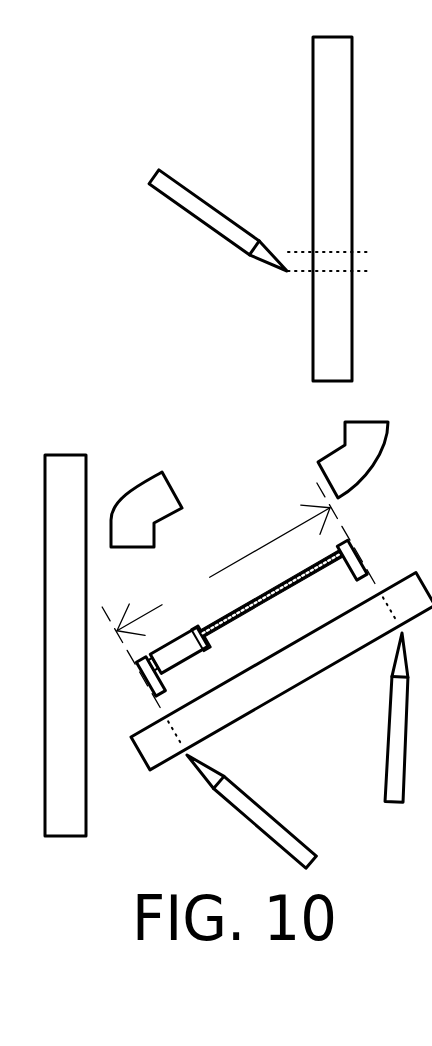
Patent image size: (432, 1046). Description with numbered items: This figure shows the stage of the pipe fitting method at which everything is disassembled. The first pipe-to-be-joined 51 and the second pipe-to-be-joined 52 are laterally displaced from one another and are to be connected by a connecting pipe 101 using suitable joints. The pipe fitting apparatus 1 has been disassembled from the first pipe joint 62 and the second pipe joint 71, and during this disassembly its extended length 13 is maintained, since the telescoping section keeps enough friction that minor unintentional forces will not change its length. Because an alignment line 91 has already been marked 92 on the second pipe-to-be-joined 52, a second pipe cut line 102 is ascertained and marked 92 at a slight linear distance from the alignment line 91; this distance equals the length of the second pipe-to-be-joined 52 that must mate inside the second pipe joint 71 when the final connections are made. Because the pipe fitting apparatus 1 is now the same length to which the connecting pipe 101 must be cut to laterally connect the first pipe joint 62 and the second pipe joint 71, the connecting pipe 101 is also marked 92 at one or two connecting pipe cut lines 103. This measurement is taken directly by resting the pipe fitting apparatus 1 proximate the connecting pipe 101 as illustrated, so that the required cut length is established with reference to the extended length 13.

The pipe fitting apparatus 1 is at (245, 537).
The extended length 13 is at (239, 597).
The first pipe-to-be-joined 51 is at (67, 622).
The second pipe-to-be-joined 52 is at (330, 148).
The first pipe joint 62 is at (143, 507).
The second pipe joint 71 is at (360, 462).
The alignment line 91 is at (367, 252).
The marking 92 is at (207, 212).
The connecting pipe 101 is at (280, 672).
The second pipe cut line 102 is at (357, 271).
The connecting pipe cut line 103 is at (390, 612).